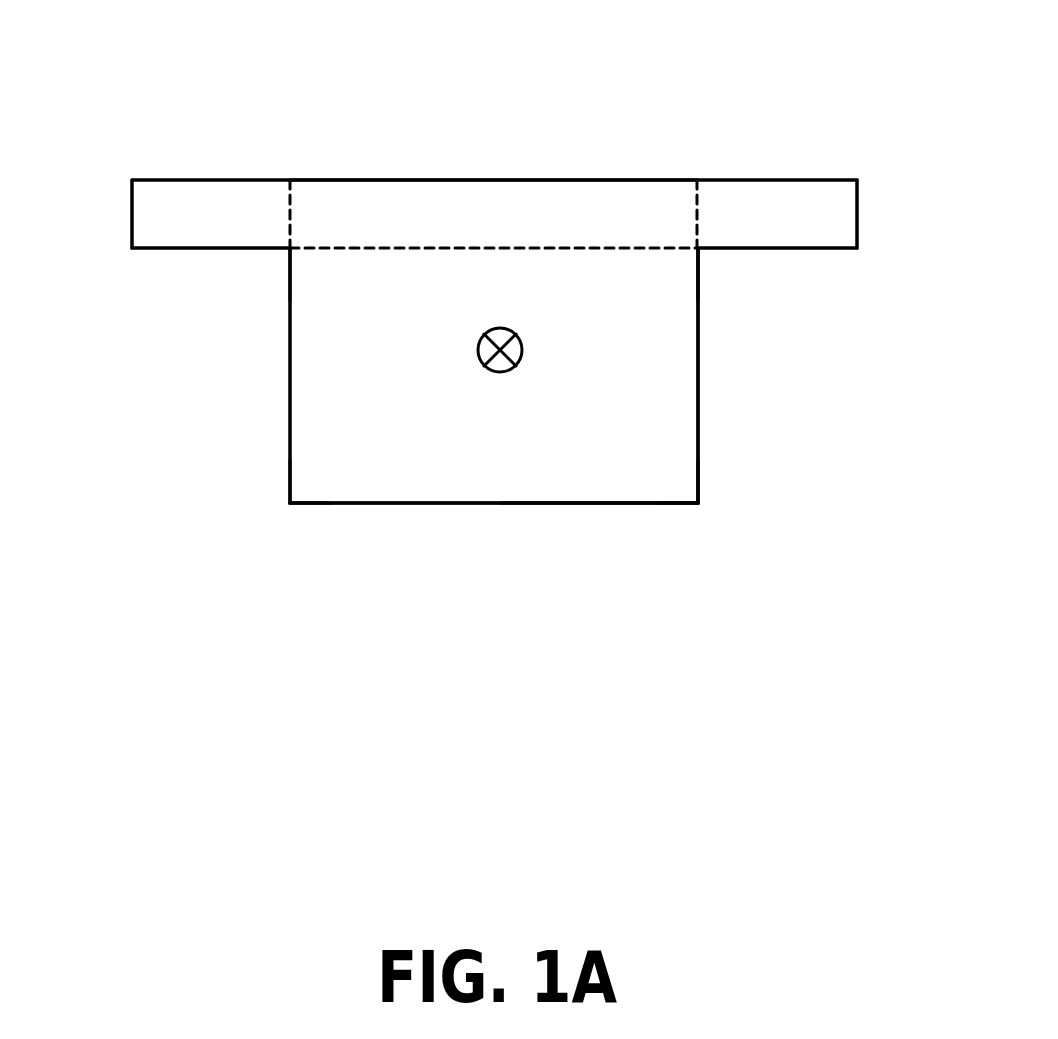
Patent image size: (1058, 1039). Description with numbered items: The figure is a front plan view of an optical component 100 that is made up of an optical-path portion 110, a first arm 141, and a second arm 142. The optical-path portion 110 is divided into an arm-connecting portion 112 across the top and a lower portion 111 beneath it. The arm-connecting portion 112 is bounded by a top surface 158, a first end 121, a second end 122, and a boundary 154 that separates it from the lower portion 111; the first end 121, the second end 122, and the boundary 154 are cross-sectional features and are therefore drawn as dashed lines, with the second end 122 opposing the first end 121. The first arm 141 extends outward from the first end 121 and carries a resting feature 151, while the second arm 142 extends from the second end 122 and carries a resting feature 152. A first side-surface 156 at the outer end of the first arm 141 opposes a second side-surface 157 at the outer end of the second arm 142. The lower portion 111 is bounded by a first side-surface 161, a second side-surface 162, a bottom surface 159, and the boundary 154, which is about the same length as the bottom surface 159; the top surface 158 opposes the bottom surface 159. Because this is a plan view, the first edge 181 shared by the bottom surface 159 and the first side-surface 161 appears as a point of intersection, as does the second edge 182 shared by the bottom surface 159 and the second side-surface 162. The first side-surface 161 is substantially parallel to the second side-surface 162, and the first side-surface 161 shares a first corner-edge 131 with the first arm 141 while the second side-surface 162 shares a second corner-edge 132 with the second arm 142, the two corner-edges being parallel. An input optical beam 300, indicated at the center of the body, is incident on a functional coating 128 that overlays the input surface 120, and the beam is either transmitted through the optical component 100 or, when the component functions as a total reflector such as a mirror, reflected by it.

The optical component 100 is at (516, 788).
The optical-path portion 110 is at (703, 633).
The lower portion 111 is at (880, 253).
The arm-connecting portion 112 is at (527, 190).
The input surface 120 is at (468, 473).
The first end 121 is at (288, 223).
The second end 122 is at (697, 207).
The functional coating 128 is at (610, 467).
The first corner-edge 131 is at (285, 252).
The second corner-edge 132 is at (703, 252).
The first arm 141 is at (290, 178).
The second arm 142 is at (857, 178).
The resting feature 151 is at (177, 250).
The resting feature 152 is at (785, 252).
The boundary 154 is at (535, 247).
The first side-surface 156 is at (132, 228).
The second side-surface 157 is at (857, 228).
The top surface 158 is at (403, 180).
The bottom surface 159 is at (385, 503).
The first side-surface 161 is at (290, 368).
The second side-surface 162 is at (700, 385).
The first edge 181 is at (290, 503).
The second edge 182 is at (698, 503).
The input optical beam 300 is at (476, 357).